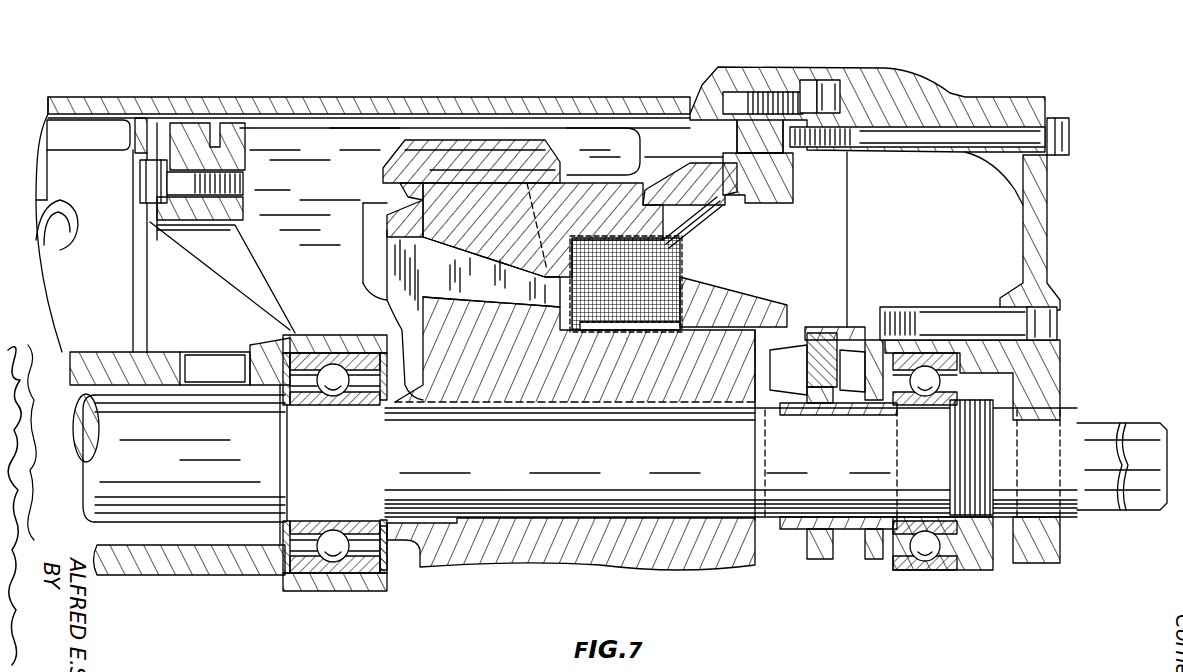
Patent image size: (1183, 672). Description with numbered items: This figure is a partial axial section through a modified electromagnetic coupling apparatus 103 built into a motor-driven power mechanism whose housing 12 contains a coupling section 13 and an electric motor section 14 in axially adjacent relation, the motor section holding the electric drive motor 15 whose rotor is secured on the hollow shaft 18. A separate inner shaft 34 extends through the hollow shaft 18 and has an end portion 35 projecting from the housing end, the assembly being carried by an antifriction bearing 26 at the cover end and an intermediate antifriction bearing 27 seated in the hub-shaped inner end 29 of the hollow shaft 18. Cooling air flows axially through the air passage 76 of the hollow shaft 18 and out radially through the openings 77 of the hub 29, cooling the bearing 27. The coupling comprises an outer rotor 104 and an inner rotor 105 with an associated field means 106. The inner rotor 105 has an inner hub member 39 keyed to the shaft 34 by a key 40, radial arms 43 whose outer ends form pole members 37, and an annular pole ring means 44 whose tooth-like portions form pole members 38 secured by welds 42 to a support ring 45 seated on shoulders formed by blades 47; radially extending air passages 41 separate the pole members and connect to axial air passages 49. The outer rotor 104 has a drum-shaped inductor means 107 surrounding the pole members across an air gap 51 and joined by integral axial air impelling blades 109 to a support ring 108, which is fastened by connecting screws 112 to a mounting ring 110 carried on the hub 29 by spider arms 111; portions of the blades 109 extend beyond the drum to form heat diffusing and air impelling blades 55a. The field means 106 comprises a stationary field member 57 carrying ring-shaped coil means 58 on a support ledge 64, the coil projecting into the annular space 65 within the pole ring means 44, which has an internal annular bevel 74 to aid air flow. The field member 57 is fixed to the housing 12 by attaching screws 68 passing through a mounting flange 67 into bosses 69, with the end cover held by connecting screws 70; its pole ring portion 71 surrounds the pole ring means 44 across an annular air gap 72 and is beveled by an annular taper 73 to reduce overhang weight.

The housing 12 is at (306, 93).
The coupling section 13 is at (513, 97).
The electric motor section 14 is at (62, 96).
The electric drive motor 15 is at (58, 197).
The shaft 18 is at (84, 358).
The antifriction bearing 26 is at (912, 398).
The intermediate antifriction bearing 27 is at (333, 578).
The hub-shaped inner end 29 is at (330, 317).
The shaft 34 is at (490, 512).
The end portion 35 is at (1093, 453).
The pole members 37 is at (553, 156).
The pole members 38 is at (430, 192).
The inner hub member 39 is at (490, 405).
The key 40 is at (750, 432).
The radially extending air passages 41 is at (522, 262).
The welds 42 is at (410, 190).
The radial arms 43 is at (390, 252).
The annular pole ring means 44 is at (663, 203).
The support ring 45 is at (397, 217).
The blades 47 is at (393, 273).
The axial air passages 49 is at (467, 292).
The air gap 51 is at (478, 178).
The heat diffusing and air impelling blades 55a is at (640, 147).
The field member 57 is at (842, 196).
The coil means 58 is at (662, 272).
The support ledge 64 is at (646, 328).
The annular space 65 is at (620, 244).
The mounting flange 67 is at (810, 84).
The attaching screws 68 is at (815, 102).
The bosses 69 is at (762, 90).
The connecting screws 70 is at (940, 133).
The pole ring portion 71 is at (713, 192).
The annular air gap 72 is at (737, 190).
The annular taper 73 is at (677, 172).
The internal annular bevel 74 is at (693, 203).
The air passage 76 is at (160, 392).
The openings 77 is at (207, 353).
The electromagnetic coupling apparatus 103 is at (403, 143).
The outer rotor 104 is at (531, 138).
The inner rotor 105 is at (617, 178).
The field means 106 is at (775, 137).
The drum-shaped inductor means 107 is at (467, 145).
The support ring 108 is at (222, 150).
The air impelling blades 109 is at (316, 138).
The mounting ring 110 is at (178, 158).
The spider arms 111 is at (167, 273).
The connecting screws 112 is at (238, 192).